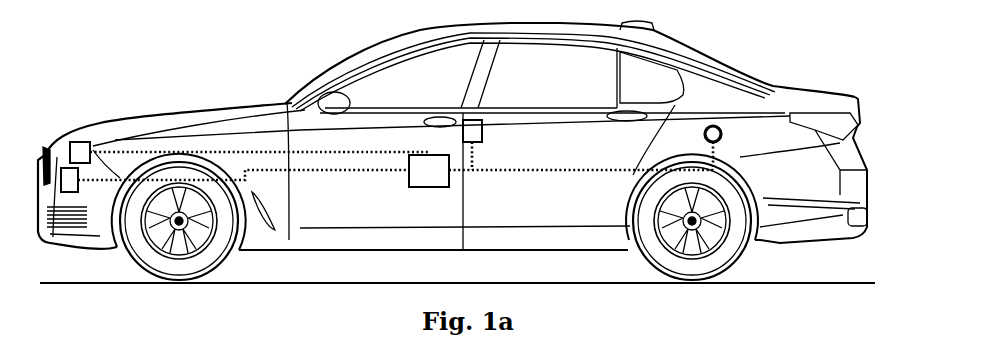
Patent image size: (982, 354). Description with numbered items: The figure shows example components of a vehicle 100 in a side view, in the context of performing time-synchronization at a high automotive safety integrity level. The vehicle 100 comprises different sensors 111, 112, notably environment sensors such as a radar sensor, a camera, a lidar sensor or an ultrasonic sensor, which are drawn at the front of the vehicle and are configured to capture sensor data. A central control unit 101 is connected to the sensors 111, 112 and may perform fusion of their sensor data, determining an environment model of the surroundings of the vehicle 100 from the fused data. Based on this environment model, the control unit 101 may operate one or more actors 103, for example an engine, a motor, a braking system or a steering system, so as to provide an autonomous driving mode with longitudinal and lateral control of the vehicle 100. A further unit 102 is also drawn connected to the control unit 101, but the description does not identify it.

The vehicle 100 is at (165, 47).
The control unit 101 is at (409, 173).
The sensor unit 102 is at (482, 132).
The actor 103 is at (713, 126).
The sensor 111 is at (70, 192).
The sensor 112 is at (78, 142).